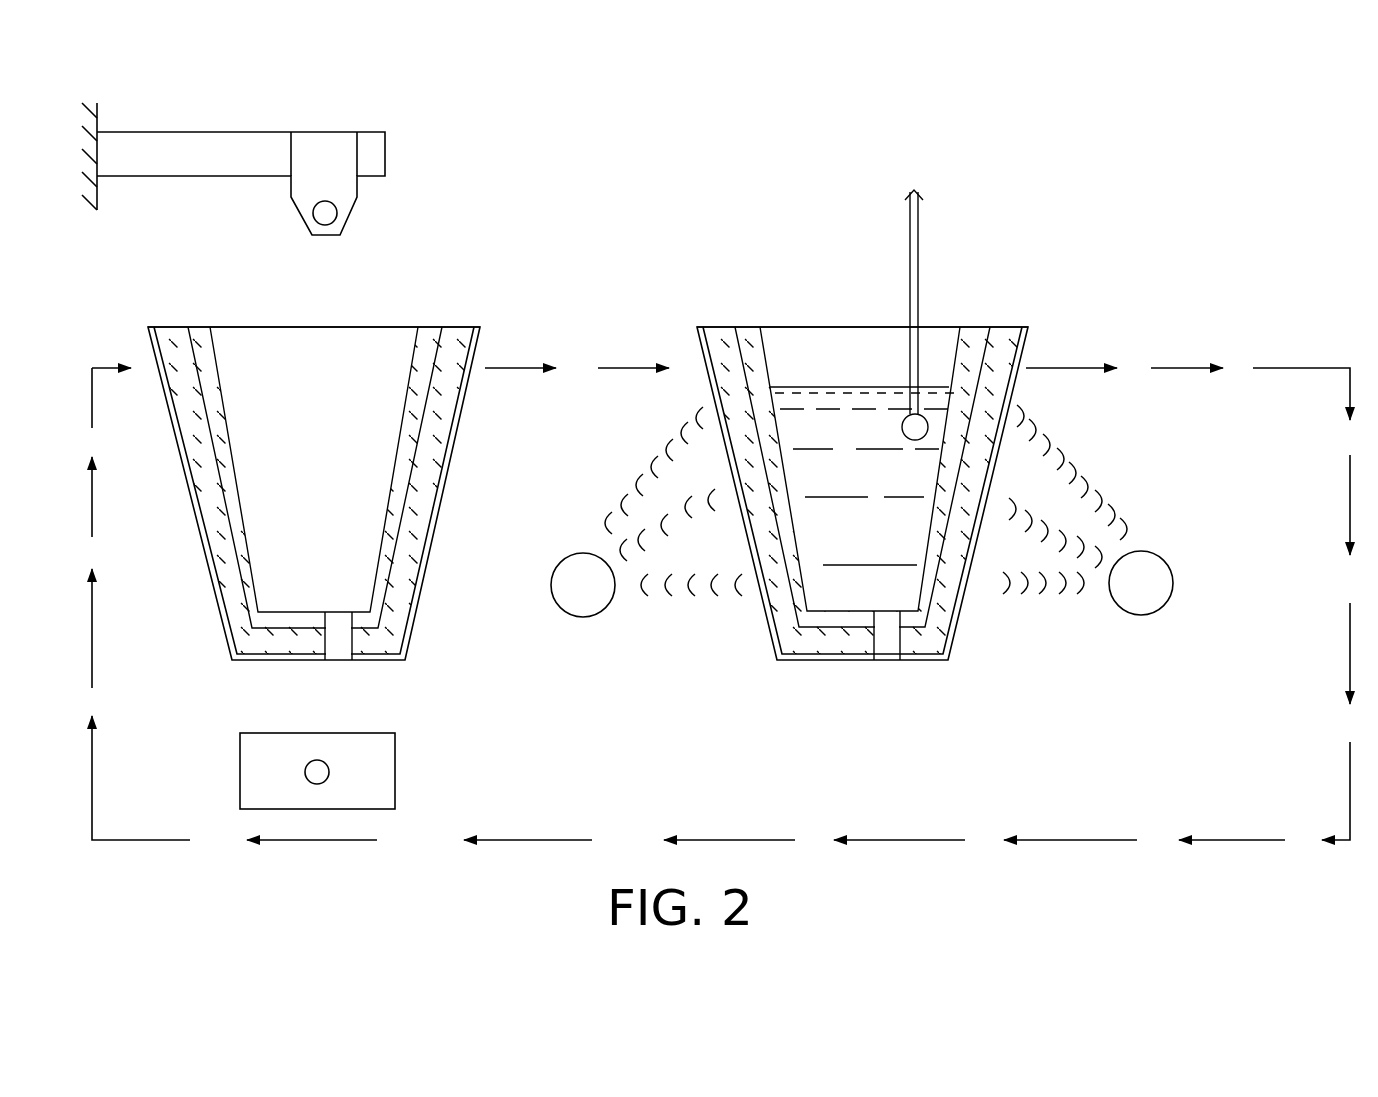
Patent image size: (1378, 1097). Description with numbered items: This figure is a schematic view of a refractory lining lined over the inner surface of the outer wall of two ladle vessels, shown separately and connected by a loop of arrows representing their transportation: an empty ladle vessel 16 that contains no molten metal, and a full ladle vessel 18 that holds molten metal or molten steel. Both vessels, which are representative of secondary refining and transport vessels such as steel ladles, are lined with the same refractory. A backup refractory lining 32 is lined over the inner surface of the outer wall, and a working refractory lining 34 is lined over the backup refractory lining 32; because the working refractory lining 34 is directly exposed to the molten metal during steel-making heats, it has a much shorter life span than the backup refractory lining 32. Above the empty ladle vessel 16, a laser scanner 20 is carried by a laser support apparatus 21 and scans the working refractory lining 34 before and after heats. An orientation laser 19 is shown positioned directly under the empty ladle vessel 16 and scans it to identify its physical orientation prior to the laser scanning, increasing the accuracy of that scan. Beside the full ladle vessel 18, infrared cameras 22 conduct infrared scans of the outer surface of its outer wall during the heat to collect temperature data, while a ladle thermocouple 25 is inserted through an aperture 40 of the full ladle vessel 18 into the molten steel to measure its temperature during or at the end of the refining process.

The empty ladle vessel 16 is at (200, 592).
The full ladle vessel 18 is at (688, 345).
The orientation laser 19 is at (382, 765).
The laser scanner 20 is at (334, 215).
The laser support apparatus 21 is at (233, 140).
The infrared cameras 22 is at (582, 603).
The ladle thermocouple 25 is at (927, 425).
The backup refractory lining 32 is at (216, 504).
The working refractory lining 34 is at (222, 435).
The aperture 40 is at (318, 333).